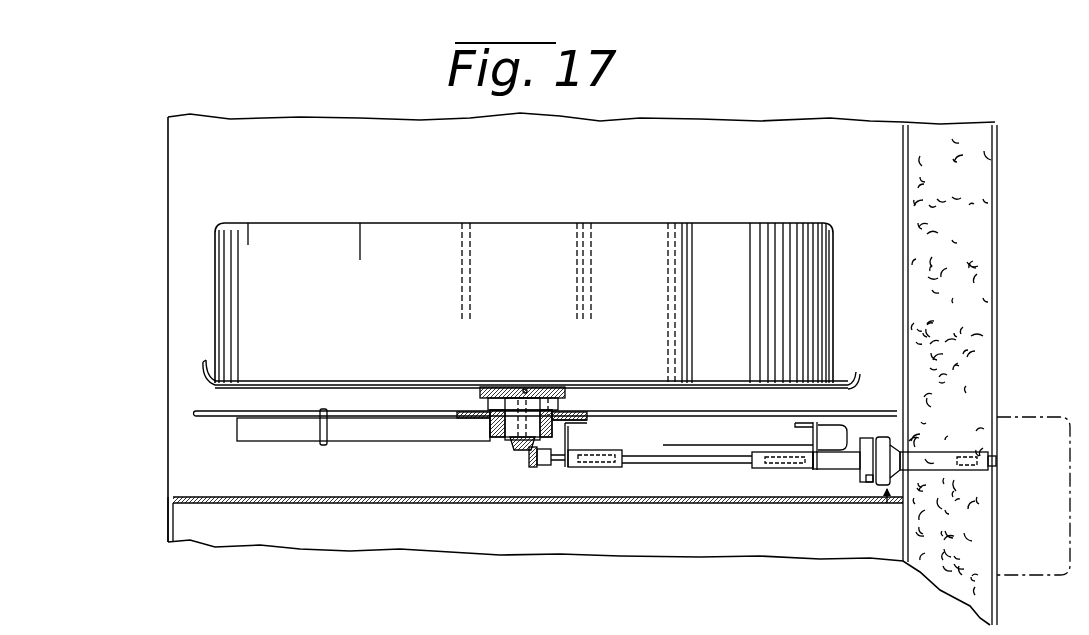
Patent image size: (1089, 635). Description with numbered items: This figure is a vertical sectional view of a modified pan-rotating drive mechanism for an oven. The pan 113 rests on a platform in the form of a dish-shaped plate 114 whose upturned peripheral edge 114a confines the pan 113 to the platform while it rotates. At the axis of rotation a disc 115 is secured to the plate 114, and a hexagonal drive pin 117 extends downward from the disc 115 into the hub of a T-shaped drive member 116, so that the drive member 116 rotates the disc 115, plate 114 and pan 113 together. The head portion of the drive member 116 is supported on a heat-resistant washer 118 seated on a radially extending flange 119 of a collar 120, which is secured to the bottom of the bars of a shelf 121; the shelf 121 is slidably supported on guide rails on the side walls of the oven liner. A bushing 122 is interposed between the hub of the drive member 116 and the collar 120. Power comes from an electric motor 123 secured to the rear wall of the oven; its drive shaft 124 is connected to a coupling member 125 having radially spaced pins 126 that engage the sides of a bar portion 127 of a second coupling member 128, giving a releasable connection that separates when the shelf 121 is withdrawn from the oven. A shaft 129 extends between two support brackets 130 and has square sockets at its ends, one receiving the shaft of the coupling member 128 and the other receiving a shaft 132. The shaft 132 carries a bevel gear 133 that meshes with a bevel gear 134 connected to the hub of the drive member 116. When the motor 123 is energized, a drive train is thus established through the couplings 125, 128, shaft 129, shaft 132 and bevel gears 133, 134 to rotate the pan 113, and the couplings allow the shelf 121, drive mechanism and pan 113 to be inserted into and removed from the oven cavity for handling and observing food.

The pan 113 is at (734, 222).
The dish-shaped plate 114 is at (379, 382).
The upturned peripheral edge 114a is at (852, 372).
The disc 115 is at (497, 387).
The T-shaped drive member 116 is at (564, 401).
The hexagonal drive pin 117 is at (548, 396).
The flange 118 is at (488, 404).
The radially extending flange 119 is at (503, 425).
The collar 120 is at (490, 437).
The shelf 121 is at (213, 418).
The bushing 122 is at (550, 431).
The electric motor 123 is at (1022, 417).
The drive shaft 124 is at (985, 455).
The coupling member 125 is at (887, 506).
The radially spaced pins 126 is at (866, 486).
The bar portion 127 is at (868, 437).
The second coupling member 128 is at (850, 472).
The shaft 129 is at (693, 462).
The support brackets 130 is at (813, 437).
The shaft 132 is at (553, 466).
The bevel gear 133 is at (531, 468).
The bevel gear 134 is at (524, 451).